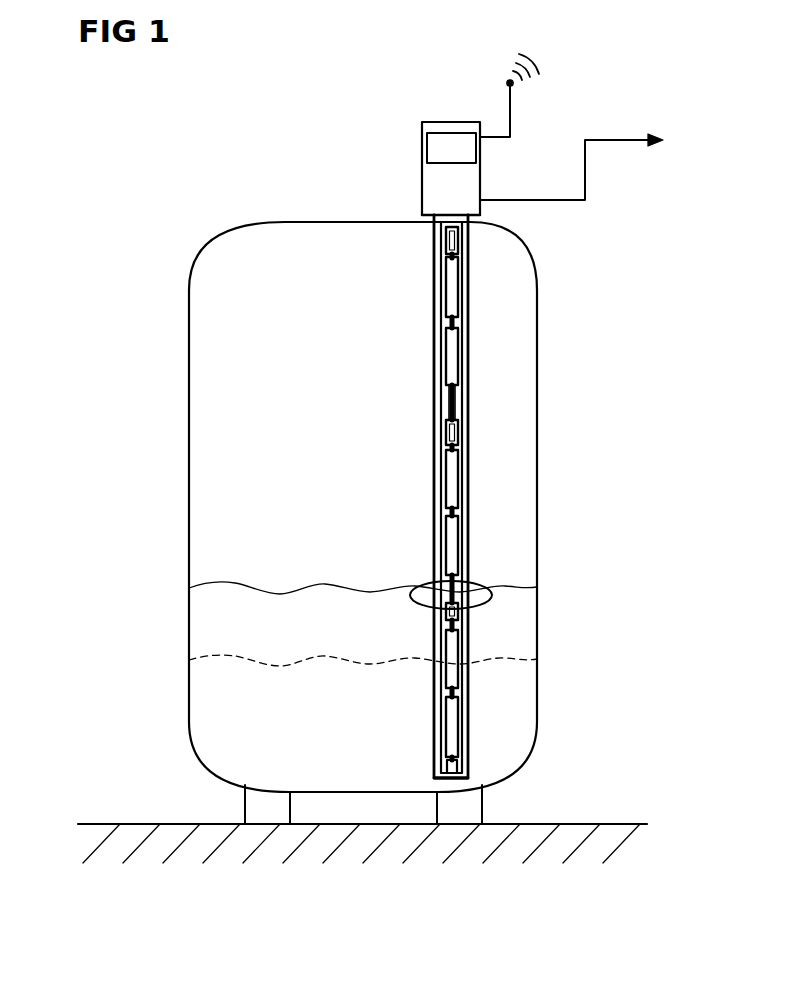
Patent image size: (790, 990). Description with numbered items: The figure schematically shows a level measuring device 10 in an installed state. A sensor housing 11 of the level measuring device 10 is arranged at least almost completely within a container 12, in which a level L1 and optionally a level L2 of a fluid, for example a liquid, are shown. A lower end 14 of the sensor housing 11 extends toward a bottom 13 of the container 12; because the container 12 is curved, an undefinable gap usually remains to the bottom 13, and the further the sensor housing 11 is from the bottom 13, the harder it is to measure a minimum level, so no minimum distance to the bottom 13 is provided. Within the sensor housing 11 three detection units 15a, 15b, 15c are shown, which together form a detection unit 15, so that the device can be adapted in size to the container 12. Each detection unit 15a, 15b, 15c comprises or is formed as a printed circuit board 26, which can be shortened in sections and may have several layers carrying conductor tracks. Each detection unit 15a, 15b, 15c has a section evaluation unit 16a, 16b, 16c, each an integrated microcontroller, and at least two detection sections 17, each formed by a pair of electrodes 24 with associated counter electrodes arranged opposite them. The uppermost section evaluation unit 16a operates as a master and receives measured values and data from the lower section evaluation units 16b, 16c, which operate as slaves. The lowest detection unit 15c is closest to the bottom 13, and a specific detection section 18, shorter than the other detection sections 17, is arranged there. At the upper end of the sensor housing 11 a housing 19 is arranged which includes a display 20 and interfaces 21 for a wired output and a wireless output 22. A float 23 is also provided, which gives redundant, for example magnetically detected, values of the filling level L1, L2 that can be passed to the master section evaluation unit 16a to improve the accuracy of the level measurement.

The level measuring device 10 is at (403, 153).
The sensor housing 11 is at (433, 487).
The container 12 is at (189, 345).
The bottom 13 is at (360, 793).
The lower end 14 is at (475, 780).
The detection unit 15 is at (616, 228).
The detection unit 15a is at (479, 228).
The detection unit 15b is at (479, 398).
The detection unit 15c is at (479, 612).
The section evaluation unit 16a is at (447, 240).
The section evaluation unit 16b is at (446, 433).
The section evaluation unit 16c is at (446, 622).
The detection section 17 is at (425, 258).
The specific detection section 18 is at (426, 760).
The housing 19 is at (480, 168).
The display 20 is at (450, 130).
The interfaces 21 is at (620, 140).
The wireless output 22 is at (513, 105).
The float 23 is at (410, 597).
The pair of electrodes 24 is at (446, 558).
The printed circuit board 26 is at (446, 393).
The level L1 is at (228, 657).
The level L2 is at (218, 580).